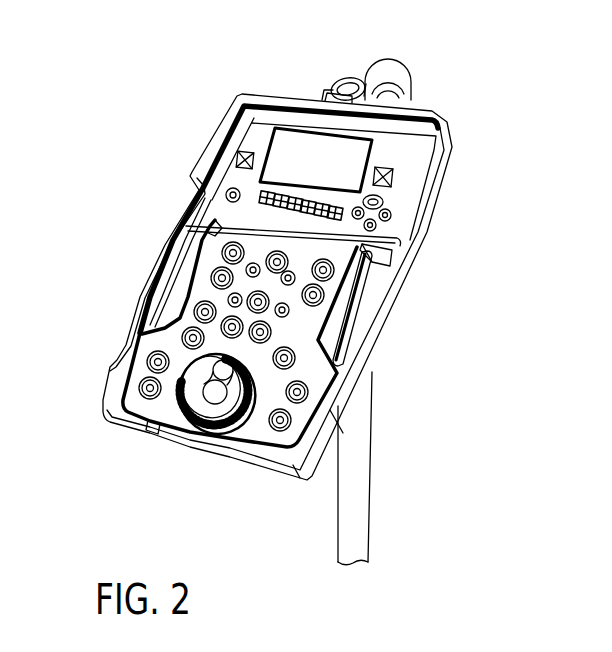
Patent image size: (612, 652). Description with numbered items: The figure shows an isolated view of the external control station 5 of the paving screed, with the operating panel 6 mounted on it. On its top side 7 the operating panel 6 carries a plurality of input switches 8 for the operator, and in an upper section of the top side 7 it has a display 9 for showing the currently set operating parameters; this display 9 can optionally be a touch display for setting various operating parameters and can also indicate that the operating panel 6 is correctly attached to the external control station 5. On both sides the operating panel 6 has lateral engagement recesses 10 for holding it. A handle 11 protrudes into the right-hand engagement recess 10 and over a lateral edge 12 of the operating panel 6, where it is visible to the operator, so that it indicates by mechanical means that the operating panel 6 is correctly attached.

The external control station 5 is at (457, 105).
The operating panel 6 is at (257, 97).
The top side 7 is at (307, 253).
The input switches 8 is at (220, 257).
The display 9 is at (288, 137).
The lateral engagement recesses 10 is at (190, 277).
The handle 11 is at (350, 337).
The lateral edge 12 is at (345, 278).